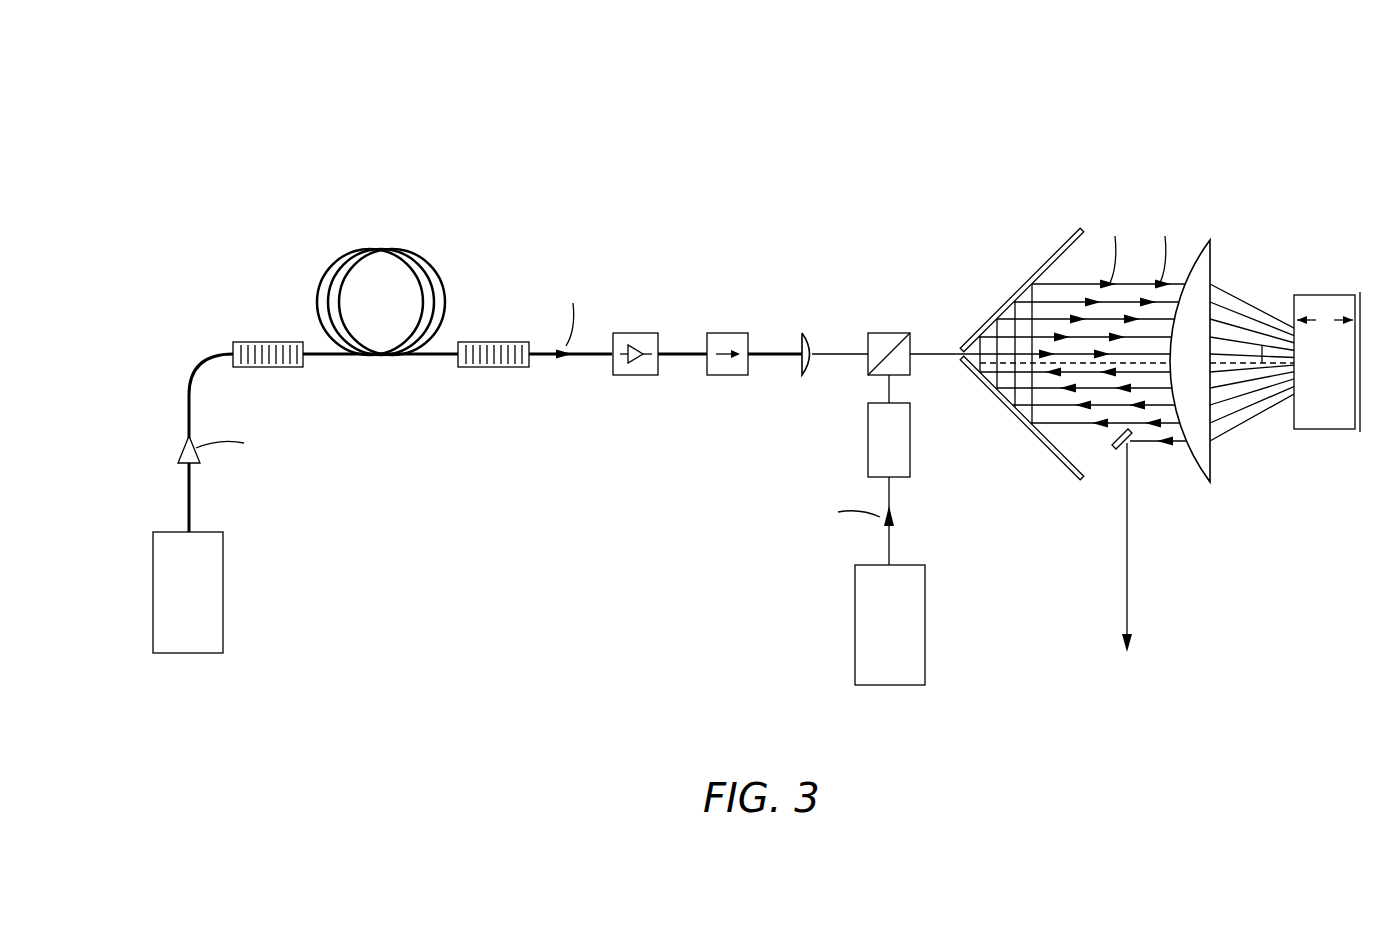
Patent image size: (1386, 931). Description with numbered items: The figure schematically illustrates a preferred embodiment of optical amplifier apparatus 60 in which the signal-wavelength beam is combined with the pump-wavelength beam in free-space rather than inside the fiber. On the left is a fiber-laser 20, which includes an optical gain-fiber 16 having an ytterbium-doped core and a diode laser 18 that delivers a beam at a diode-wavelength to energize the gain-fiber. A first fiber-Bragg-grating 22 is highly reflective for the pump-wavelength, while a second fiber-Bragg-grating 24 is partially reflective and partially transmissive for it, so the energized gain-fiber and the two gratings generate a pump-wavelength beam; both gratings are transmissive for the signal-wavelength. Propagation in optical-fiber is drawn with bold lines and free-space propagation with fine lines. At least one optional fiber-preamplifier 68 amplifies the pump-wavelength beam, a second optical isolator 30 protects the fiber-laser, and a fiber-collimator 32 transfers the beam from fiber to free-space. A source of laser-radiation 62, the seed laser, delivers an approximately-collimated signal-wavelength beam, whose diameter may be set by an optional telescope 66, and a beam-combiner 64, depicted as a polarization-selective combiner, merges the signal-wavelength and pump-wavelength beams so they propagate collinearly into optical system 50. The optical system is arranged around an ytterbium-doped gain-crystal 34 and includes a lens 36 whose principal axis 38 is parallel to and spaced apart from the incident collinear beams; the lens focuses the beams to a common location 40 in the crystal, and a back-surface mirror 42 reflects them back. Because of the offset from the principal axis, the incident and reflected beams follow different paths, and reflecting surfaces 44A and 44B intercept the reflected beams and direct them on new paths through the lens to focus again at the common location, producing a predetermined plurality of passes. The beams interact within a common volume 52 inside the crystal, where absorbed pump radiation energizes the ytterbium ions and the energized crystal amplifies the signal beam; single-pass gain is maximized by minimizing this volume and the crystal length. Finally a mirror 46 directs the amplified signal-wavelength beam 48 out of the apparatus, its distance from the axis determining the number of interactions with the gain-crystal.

The optical gain-fiber 16 is at (382, 248).
The diode laser 18 is at (225, 630).
The fiber-laser 20 is at (557, 126).
The first fiber-Bragg-grating 22 is at (289, 341).
The second fiber-Bragg-grating 24 is at (480, 341).
The second optical isolator 30 is at (720, 333).
The fiber-collimator 32 is at (802, 333).
The ytterbium-doped gain-crystal 34 is at (1310, 282).
The lens 36 is at (1207, 240).
The principal axis 38 is at (1262, 363).
The common location 40 is at (1352, 375).
The back-surface mirror 42 is at (1360, 290).
The reflecting surface 44A is at (1046, 262).
The reflecting surface 44B is at (1047, 443).
The mirror 46 is at (1117, 448).
The amplified signal-wavelength beam 48 is at (1140, 565).
The optical system 50 is at (1015, 122).
The common volume 52 is at (1340, 388).
The amplifier apparatus 60 is at (1032, 705).
The source of laser-radiation 62 is at (853, 663).
The beam-combiner 64 is at (884, 320).
The telescope 66 is at (866, 455).
The fiber-preamplifier 68 is at (623, 333).